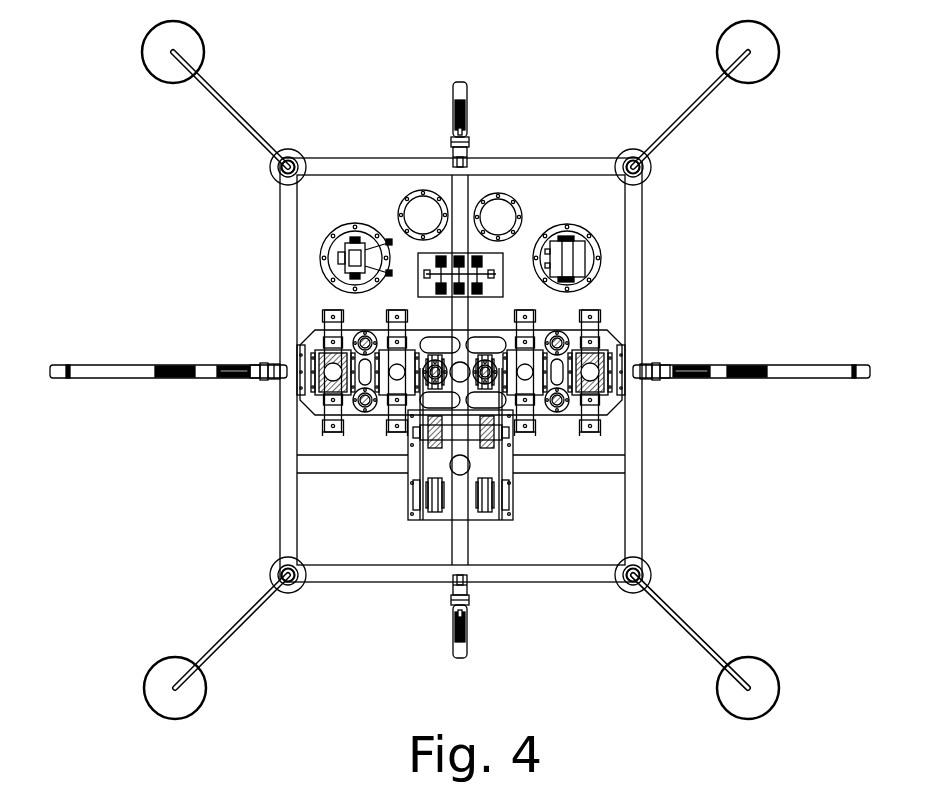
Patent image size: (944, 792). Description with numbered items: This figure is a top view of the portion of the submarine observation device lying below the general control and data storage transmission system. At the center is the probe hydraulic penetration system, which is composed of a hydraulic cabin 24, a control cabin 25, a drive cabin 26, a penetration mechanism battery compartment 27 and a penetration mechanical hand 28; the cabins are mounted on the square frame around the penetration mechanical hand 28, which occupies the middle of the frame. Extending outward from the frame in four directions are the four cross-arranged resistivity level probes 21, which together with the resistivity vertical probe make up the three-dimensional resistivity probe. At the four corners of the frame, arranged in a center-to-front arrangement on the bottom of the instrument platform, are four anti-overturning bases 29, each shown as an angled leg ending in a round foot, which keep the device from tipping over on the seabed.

The resistivity level probe 21 is at (460, 342).
The hydraulic cabin 24 is at (357, 196).
The control cabin 25 is at (423, 170).
The drive cabin 26 is at (504, 170).
The penetration mechanism battery compartment 27 is at (568, 196).
The penetration mechanical hand 28 is at (515, 327).
The anti-overturning base 29 is at (748, 657).